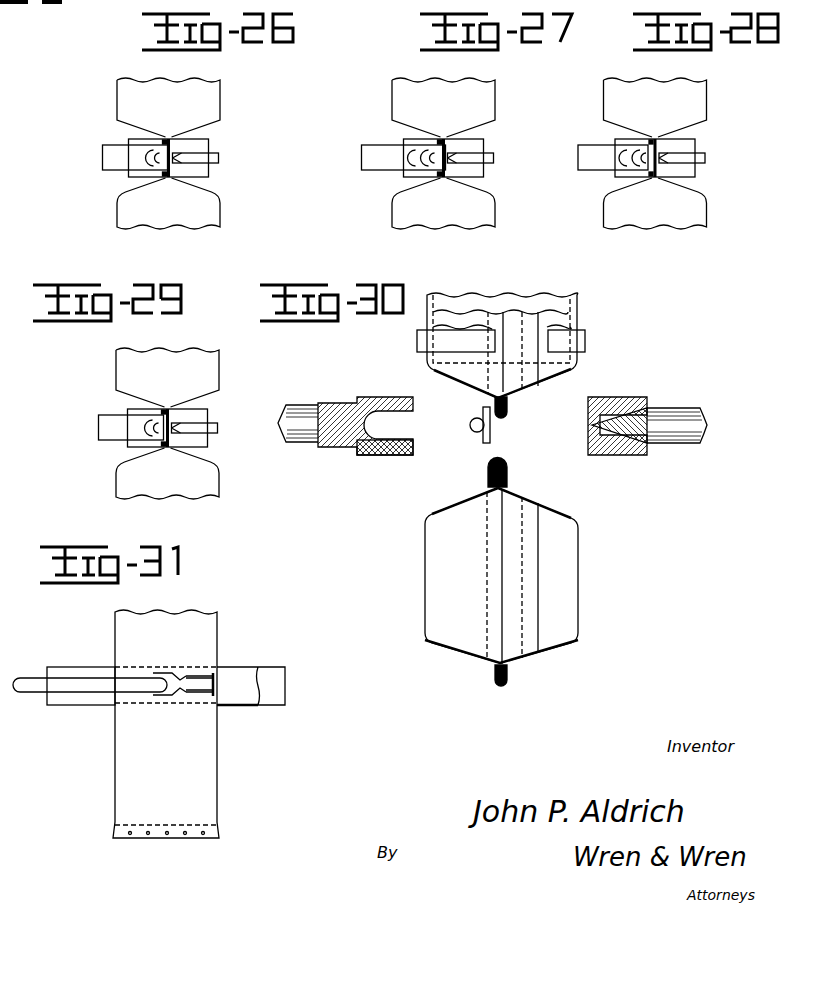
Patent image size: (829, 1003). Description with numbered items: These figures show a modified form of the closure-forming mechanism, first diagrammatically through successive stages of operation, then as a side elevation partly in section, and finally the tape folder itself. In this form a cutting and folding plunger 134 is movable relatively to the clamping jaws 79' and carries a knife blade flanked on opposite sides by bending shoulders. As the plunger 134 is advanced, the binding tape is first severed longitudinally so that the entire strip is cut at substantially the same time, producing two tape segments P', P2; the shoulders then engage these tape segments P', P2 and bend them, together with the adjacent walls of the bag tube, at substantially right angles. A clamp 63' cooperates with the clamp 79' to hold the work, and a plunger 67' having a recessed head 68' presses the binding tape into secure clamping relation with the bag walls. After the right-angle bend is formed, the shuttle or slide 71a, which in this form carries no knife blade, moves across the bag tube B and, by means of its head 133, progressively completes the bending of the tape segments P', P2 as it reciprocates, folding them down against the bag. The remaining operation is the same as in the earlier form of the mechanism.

In FIG. 30, the clamp 63' is at (365, 402).
In FIG. 30, the plunger 67' is at (308, 448).
In FIG. 30, the recessed head 68' is at (385, 468).
In FIG. 30, the shuttle or slide 71a is at (477, 431).
In FIG. 31, the shuttle or slide 71a is at (35, 680).
In FIG. 30, the clamping jaws 79' is at (636, 399).
In FIG. 30, the cutting and folding plunger 134 is at (657, 420).
In FIG. 31, the bar B is at (200, 628).
In FIG. 31, the head 133 is at (182, 680).
In FIG. 31, the tape segment P' is at (240, 659).
In FIG. 31, the tape segment P2 is at (207, 707).